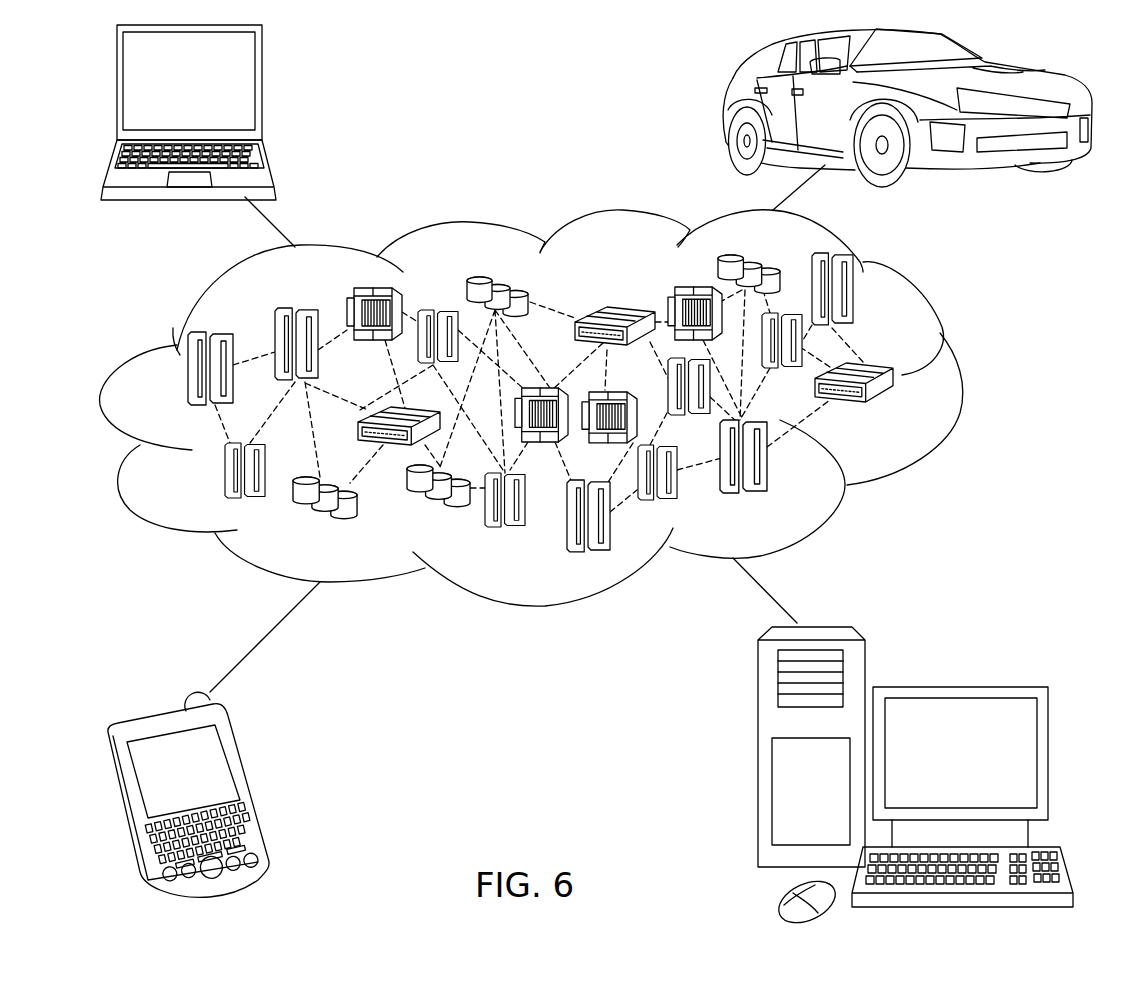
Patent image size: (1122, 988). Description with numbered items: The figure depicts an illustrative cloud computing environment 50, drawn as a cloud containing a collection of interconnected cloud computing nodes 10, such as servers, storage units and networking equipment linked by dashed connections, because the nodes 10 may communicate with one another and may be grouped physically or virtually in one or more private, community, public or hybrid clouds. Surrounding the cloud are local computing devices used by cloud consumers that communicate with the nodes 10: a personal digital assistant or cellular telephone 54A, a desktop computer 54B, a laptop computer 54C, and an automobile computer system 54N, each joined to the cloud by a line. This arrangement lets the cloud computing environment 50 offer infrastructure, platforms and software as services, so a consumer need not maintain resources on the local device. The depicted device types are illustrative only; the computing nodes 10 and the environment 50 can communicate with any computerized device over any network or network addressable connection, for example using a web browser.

The cloud computing nodes 10 is at (897, 412).
The cloud computing environment 50 is at (955, 380).
The personal digital assistant or cellular telephone 54A is at (245, 787).
The desktop computer 54B is at (957, 687).
The laptop computer 54C is at (262, 90).
The automobile computer system 54N is at (725, 103).